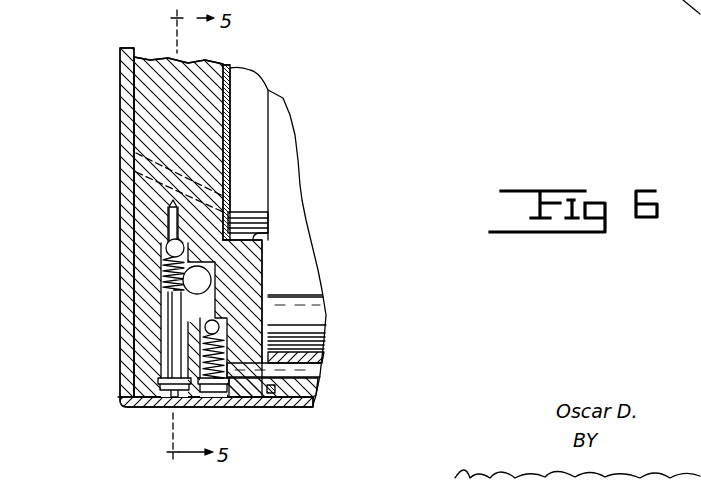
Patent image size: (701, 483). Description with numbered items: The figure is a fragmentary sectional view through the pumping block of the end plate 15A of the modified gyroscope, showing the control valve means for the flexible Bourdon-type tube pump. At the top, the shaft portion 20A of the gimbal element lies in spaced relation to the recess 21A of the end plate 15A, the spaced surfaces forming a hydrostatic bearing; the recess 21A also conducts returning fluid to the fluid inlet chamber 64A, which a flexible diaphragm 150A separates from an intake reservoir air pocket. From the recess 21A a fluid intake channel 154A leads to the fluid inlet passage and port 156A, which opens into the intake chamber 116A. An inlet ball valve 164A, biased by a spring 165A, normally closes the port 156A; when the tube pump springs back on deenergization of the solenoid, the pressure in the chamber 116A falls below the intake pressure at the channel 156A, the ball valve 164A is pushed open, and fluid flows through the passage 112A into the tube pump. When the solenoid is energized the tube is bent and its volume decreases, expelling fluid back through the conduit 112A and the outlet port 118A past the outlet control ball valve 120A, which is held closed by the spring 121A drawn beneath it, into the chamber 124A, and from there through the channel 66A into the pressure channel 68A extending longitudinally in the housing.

The end plate 15A is at (147, 87).
The shaft portion 20A is at (252, 92).
The flexible diaphragm 150A is at (232, 156).
The fluid inlet chamber 64A is at (226, 192).
The recess 21A is at (272, 242).
The passage 112A is at (200, 281).
The outlet port 118A is at (272, 297).
The chamber 124A is at (272, 325).
The pressure channel 68A is at (318, 376).
The channel 66A is at (252, 380).
The intake chamber 116A is at (166, 249).
The ball valve 164A is at (157, 234).
The spring 165A is at (172, 270).
The outlet control ball valve 120A is at (205, 328).
The spring 121A is at (200, 352).
The fluid intake channel 154A is at (125, 140).
The fluid inlet passage 156A is at (135, 186).